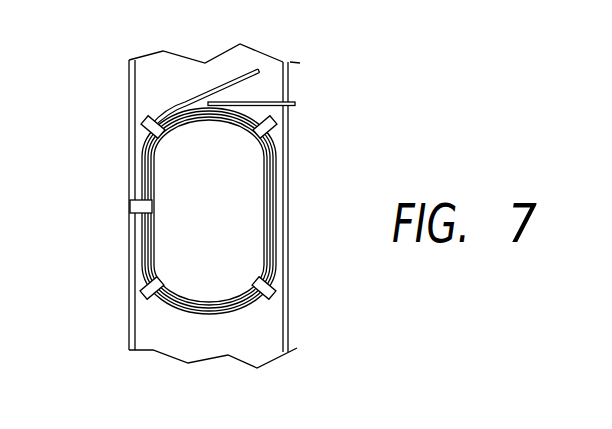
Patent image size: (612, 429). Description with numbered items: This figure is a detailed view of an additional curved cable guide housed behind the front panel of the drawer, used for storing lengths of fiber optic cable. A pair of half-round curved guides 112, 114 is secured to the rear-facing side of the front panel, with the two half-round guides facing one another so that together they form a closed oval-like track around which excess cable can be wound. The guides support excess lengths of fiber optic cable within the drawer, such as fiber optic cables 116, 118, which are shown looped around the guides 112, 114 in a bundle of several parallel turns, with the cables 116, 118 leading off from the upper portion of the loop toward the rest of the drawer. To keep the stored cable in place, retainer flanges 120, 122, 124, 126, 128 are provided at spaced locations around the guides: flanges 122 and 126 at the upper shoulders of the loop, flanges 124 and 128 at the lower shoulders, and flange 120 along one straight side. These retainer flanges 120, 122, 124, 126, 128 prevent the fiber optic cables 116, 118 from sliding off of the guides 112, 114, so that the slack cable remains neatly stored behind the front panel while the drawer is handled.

The half-round curved guide 112 is at (180, 120).
The half-round curved guide 114 is at (185, 298).
The fiber optic cable 116 is at (235, 75).
The fiber optic cable 118 is at (268, 101).
The retainer flange 120 is at (130, 205).
The retainer flange 122 is at (147, 124).
The retainer flange 124 is at (146, 296).
The retainer flange 126 is at (274, 123).
The retainer flange 128 is at (275, 296).